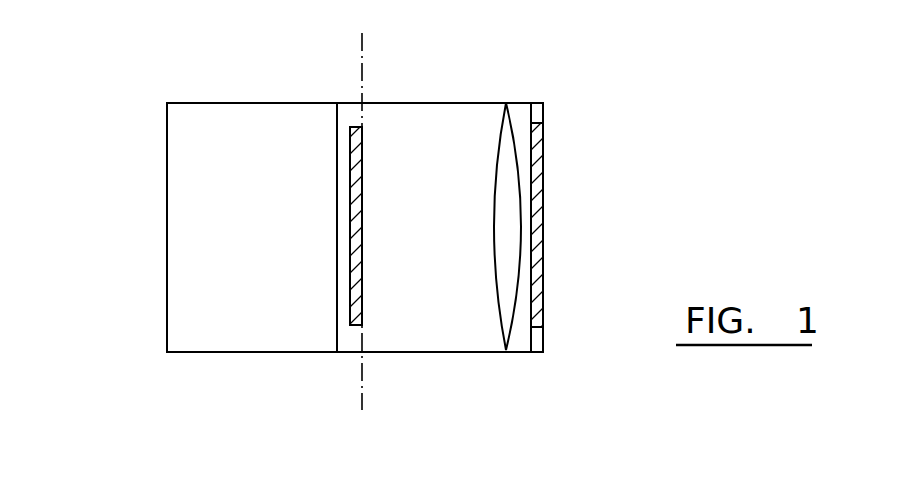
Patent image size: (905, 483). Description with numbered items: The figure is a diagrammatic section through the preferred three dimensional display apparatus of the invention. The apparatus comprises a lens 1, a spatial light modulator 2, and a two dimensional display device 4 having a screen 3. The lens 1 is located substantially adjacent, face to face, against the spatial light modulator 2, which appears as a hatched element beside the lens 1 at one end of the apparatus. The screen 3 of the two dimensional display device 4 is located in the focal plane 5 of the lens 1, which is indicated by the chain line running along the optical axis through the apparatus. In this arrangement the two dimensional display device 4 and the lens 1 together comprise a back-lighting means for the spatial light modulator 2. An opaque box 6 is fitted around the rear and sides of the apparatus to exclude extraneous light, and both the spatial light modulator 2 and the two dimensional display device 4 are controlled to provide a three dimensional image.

The lens 1 is at (510, 227).
The spatial light modulator 2 is at (540, 180).
The screen 3 is at (363, 152).
The two dimensional display device 4 is at (343, 138).
The focal plane 5 is at (365, 57).
The opaque box 6 is at (167, 238).